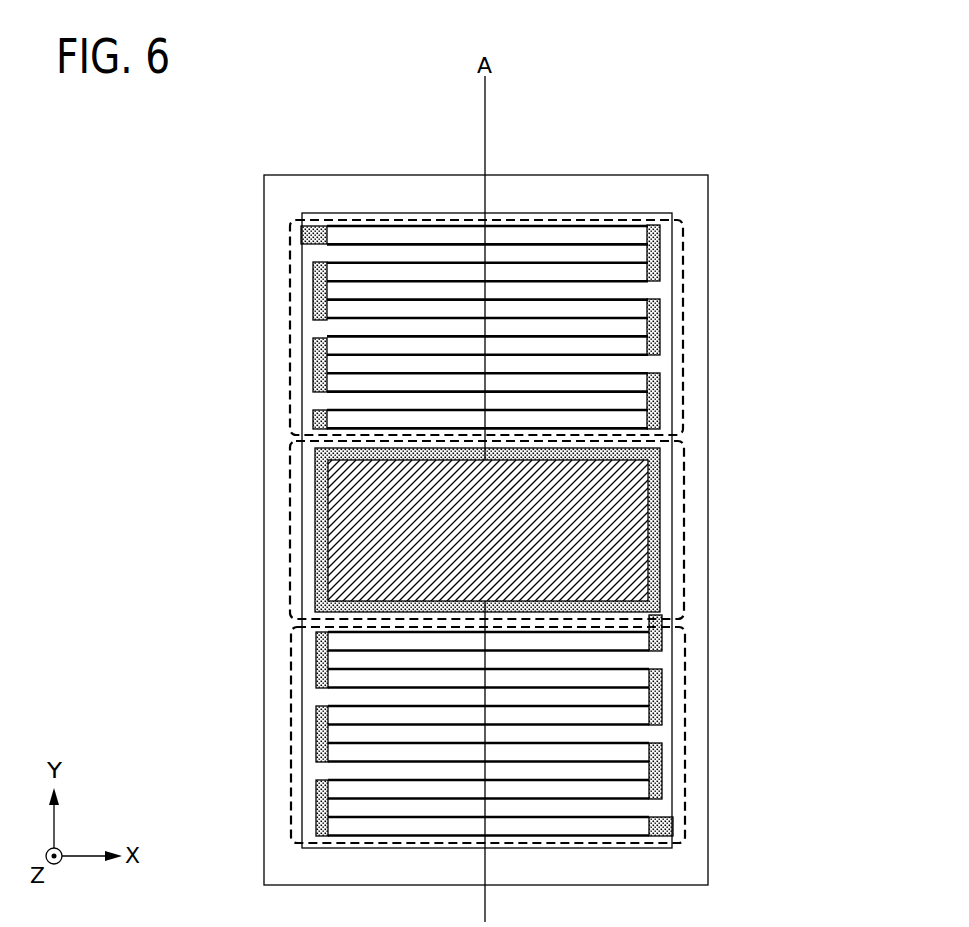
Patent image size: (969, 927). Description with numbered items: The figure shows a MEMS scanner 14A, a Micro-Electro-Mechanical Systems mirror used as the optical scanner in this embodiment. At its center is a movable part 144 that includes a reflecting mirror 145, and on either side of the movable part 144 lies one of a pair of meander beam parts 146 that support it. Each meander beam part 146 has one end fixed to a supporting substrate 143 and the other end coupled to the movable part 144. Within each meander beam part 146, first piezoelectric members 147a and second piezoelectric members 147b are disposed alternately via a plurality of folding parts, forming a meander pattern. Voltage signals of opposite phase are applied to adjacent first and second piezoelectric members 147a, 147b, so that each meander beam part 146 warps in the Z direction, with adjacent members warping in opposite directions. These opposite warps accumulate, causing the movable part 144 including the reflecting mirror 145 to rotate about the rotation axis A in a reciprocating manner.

The MEMS scanner 14A is at (866, 69).
The supporting substrate 143 is at (611, 187).
The movable part 144 is at (686, 481).
The reflecting mirror 145 is at (618, 543).
The meander beam parts 146 is at (684, 233).
The first piezoelectric member 147a is at (350, 238).
The second piezoelectric member 147b is at (622, 273).